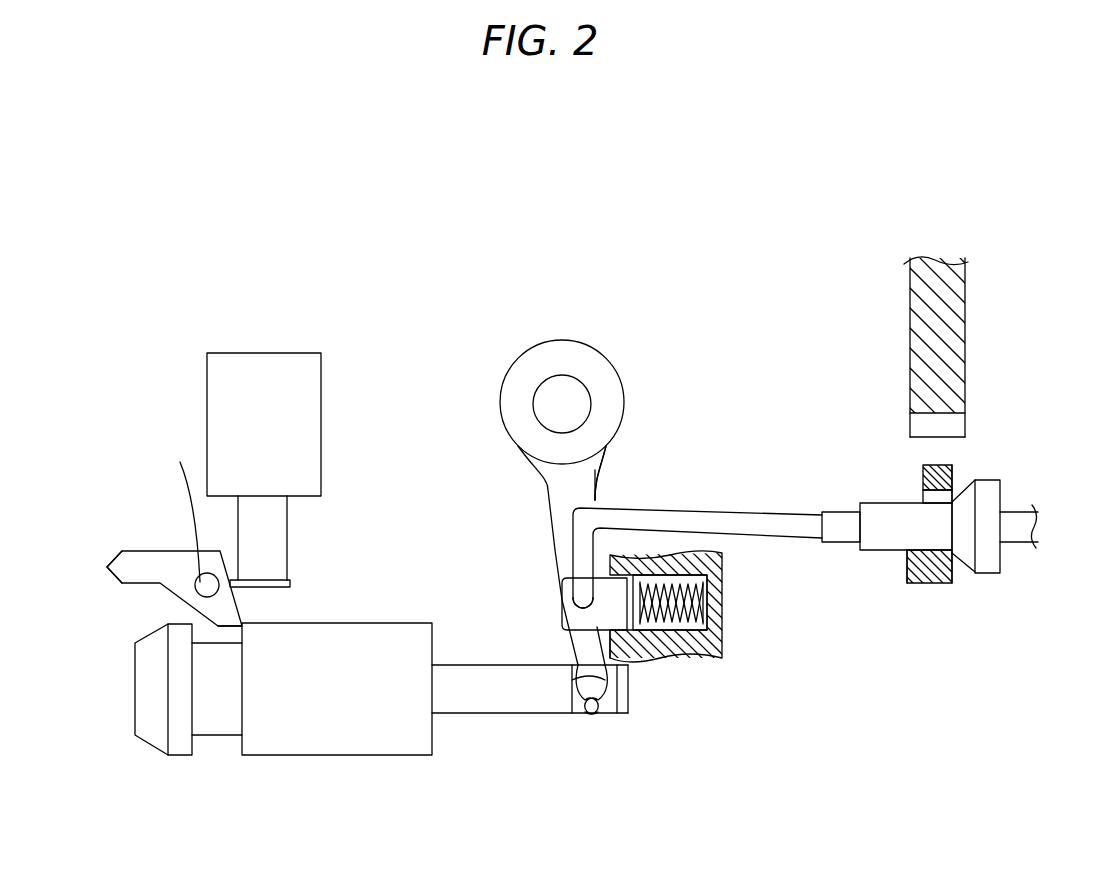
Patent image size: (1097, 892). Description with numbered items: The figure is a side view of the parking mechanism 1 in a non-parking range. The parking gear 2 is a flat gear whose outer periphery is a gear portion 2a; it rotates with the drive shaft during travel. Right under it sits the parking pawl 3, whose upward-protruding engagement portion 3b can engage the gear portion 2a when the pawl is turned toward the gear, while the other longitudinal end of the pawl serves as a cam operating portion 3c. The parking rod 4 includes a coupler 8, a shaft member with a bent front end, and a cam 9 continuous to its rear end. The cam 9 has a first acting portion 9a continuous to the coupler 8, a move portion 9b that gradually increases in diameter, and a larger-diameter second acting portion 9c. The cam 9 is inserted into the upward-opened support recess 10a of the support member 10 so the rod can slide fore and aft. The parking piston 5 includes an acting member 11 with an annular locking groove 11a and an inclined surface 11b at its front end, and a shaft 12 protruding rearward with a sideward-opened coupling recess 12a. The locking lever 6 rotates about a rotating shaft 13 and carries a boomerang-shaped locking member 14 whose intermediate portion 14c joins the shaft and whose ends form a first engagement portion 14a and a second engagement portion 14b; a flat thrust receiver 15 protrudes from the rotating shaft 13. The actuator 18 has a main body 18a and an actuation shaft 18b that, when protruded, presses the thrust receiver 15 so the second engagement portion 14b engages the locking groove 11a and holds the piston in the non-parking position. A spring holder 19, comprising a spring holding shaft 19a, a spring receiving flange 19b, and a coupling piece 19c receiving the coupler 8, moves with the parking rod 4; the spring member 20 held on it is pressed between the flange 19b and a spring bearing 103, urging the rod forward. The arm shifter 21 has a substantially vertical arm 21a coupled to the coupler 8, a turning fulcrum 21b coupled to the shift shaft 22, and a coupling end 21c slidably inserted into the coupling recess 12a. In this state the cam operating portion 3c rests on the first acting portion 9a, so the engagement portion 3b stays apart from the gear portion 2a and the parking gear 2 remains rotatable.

The parking mechanism 1 is at (328, 182).
The parking gear 2 is at (928, 347).
The gear portion 2a is at (957, 425).
The parking pawl 3 is at (892, 502).
The engagement portion 3b is at (915, 468).
The cam operating portion 3c is at (920, 498).
The parking rod 4 is at (752, 522).
The parking piston 5 is at (372, 630).
The locking lever 6 is at (150, 545).
The coupler 8 is at (580, 528).
The cam 9 is at (965, 536).
The first acting portion 9a is at (876, 540).
The move portion 9b is at (985, 490).
The second acting portion 9c is at (1030, 505).
The support member 10 is at (920, 615).
The support recess 10a is at (905, 548).
The acting member 11 is at (245, 686).
The locking groove 11a is at (200, 725).
The inclined surface 11b is at (165, 628).
The shaft 12 is at (530, 688).
The coupling recess 12a is at (583, 712).
The rotating shaft 13 is at (183, 511).
The locking member 14 is at (195, 523).
The first engagement portion 14a is at (121, 553).
The second engagement portion 14b is at (258, 616).
The intermediate portion 14c is at (212, 550).
The thrust receiver 15 is at (298, 582).
The actuator 18 is at (298, 429).
The main body 18a is at (312, 393).
The actuation shaft 18b is at (278, 525).
The spring holder 19 is at (558, 597).
The spring holding shaft 19a is at (662, 650).
The spring receiving flange 19b is at (610, 648).
The coupling piece 19c is at (568, 615).
The spring member 20 is at (635, 640).
The arm shifter 21 is at (594, 530).
The arm 21a is at (600, 497).
The turning fulcrum 21b is at (605, 380).
The coupling end 21c is at (595, 715).
The shift shaft 22 is at (562, 395).
The spring bearing 103 is at (718, 607).